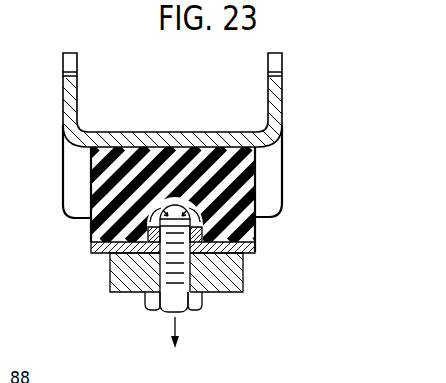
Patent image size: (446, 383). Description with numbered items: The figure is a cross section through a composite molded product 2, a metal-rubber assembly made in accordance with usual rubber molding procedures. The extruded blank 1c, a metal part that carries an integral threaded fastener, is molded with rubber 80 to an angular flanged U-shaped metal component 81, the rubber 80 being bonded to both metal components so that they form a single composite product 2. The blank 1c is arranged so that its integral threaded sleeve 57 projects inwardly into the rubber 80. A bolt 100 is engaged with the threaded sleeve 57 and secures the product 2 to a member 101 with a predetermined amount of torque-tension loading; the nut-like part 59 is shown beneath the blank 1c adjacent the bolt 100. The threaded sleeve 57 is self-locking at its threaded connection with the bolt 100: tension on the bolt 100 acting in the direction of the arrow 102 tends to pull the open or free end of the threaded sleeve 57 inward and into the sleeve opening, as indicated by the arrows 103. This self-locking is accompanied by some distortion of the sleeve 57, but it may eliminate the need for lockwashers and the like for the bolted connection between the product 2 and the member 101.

The composite molded product 2 is at (276, 242).
The angular flanged U-shaped metal component 81 is at (78, 110).
The rubber 80 is at (103, 166).
The arrows 103 is at (196, 206).
The threaded sleeve 57 is at (260, 227).
The extruded blank 1c is at (96, 256).
The member 101 is at (109, 276).
The nut 59 is at (243, 266).
The bolt 100 is at (199, 298).
The arrow 102 is at (180, 325).